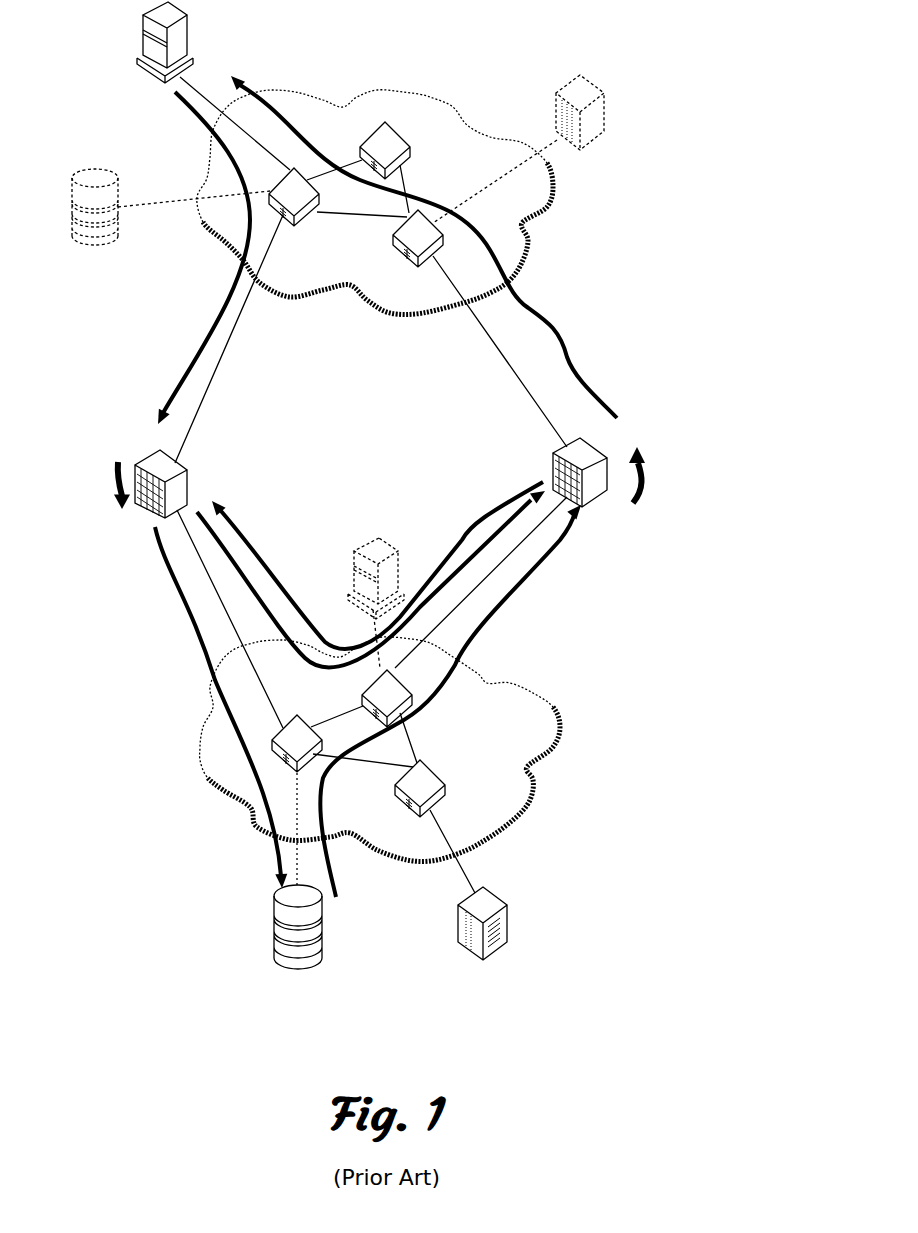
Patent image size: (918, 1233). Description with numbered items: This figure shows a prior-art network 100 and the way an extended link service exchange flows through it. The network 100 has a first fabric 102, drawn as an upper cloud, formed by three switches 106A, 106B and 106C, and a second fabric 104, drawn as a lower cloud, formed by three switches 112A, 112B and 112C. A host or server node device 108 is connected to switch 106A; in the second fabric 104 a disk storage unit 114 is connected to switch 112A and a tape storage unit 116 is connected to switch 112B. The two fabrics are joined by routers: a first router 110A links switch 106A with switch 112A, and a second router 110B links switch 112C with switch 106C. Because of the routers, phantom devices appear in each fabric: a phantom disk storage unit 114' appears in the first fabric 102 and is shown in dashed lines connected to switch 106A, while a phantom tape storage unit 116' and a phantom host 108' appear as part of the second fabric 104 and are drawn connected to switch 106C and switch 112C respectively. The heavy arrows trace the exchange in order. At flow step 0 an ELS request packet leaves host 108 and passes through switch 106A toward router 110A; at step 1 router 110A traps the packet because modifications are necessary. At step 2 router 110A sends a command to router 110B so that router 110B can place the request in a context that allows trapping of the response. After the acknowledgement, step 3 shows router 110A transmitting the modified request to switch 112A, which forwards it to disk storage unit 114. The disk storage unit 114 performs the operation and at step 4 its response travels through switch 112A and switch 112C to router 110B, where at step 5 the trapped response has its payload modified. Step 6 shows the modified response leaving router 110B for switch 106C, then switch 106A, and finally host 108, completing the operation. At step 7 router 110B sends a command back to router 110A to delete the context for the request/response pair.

The network 100 is at (807, 207).
The first fabric 102 is at (393, 308).
The second fabric 104 is at (562, 743).
The switch 106A is at (305, 217).
The switch 106B is at (405, 142).
The switch 106C is at (443, 253).
The host or server node device 108 is at (124, 42).
The phantom host 108' is at (366, 555).
The first router 110A is at (190, 485).
The second router 110B is at (553, 471).
The switch 112A is at (283, 752).
The switch 112B is at (427, 768).
The switch 112C is at (407, 708).
The disk storage unit 114 is at (266, 927).
The phantom disk storage unit 114' is at (70, 223).
The tape storage unit 116 is at (496, 948).
The phantom tape storage unit 116' is at (613, 103).
The flow step 0 is at (204, 258).
The flow step 1 is at (111, 485).
The flow step 2 is at (371, 595).
The flow step 3 is at (221, 707).
The flow step 4 is at (450, 701).
The flow step 5 is at (647, 475).
The flow step 6 is at (424, 247).
The flow step 7 is at (377, 565).